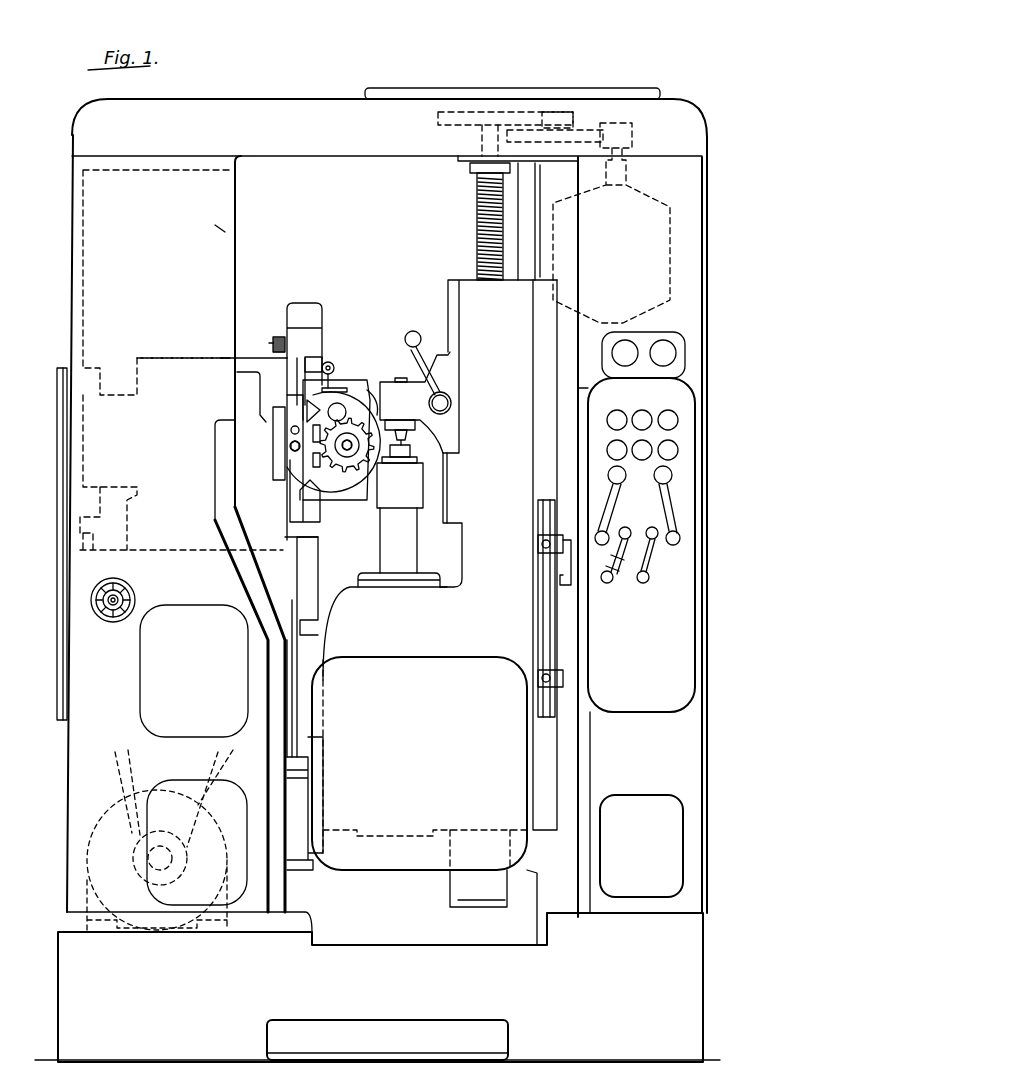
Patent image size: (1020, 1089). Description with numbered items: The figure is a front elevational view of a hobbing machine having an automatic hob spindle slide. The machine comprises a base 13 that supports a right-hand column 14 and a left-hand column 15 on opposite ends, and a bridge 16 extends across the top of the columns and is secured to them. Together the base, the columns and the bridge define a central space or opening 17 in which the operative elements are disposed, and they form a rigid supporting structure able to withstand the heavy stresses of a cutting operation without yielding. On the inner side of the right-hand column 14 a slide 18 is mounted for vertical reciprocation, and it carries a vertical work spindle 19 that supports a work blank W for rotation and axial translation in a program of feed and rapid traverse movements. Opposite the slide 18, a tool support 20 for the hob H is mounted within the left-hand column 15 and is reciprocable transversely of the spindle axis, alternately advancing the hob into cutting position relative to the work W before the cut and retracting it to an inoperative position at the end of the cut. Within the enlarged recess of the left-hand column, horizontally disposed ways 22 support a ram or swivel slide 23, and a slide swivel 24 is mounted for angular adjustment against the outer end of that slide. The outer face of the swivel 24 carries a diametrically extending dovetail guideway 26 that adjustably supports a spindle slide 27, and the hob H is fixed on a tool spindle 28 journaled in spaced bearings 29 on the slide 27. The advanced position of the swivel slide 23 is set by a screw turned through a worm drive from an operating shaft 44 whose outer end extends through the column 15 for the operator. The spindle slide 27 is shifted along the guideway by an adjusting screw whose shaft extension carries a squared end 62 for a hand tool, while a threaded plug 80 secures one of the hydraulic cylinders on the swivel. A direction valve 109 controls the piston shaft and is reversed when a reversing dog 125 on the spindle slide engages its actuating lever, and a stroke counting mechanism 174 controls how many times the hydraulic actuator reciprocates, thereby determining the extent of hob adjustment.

The base 13 is at (67, 975).
The right-hand column 14 is at (693, 313).
The left-hand column 15 is at (100, 277).
The bridge 16 is at (88, 127).
The central space or opening 17 is at (268, 206).
The slide 18 is at (473, 555).
The work spindle 19 is at (380, 554).
The tool support 20 is at (252, 345).
The ways 22 is at (318, 540).
The ram or swivel slide 23 is at (182, 346).
The slide swivel 24 is at (300, 398).
The dovetail guideway 26 is at (338, 392).
The spindle slide 27 is at (338, 485).
The tool spindle 28 is at (380, 466).
The bearings 29 is at (337, 449).
The operating shaft 44 is at (97, 597).
The squared end 62 is at (289, 447).
The threaded plug 80 is at (290, 431).
The direction valve 109 is at (339, 351).
The reversing dog 125 is at (303, 380).
The stroke counting mechanism 174 is at (330, 299).
The hob H is at (377, 398).
The work blank W is at (395, 502).